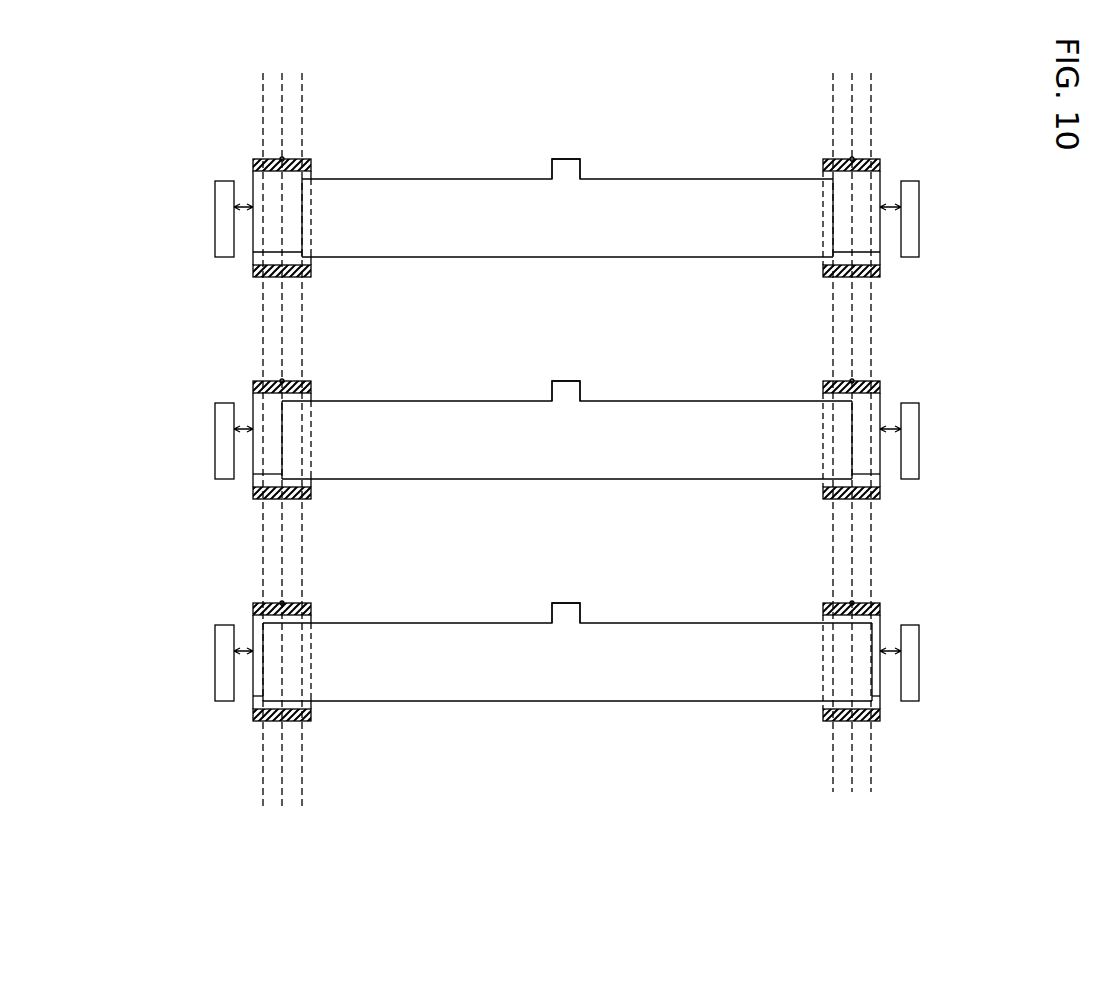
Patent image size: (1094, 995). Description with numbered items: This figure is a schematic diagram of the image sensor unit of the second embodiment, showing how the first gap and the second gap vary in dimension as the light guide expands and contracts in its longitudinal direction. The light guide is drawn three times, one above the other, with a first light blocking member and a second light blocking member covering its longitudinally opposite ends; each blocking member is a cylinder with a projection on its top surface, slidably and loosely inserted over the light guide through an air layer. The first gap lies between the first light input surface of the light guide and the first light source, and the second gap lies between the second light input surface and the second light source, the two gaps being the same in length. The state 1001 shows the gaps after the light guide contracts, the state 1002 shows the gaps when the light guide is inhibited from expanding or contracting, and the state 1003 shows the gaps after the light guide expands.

The state 1001 is at (713, 108).
The state 1002 is at (713, 336).
The state 1003 is at (713, 548).